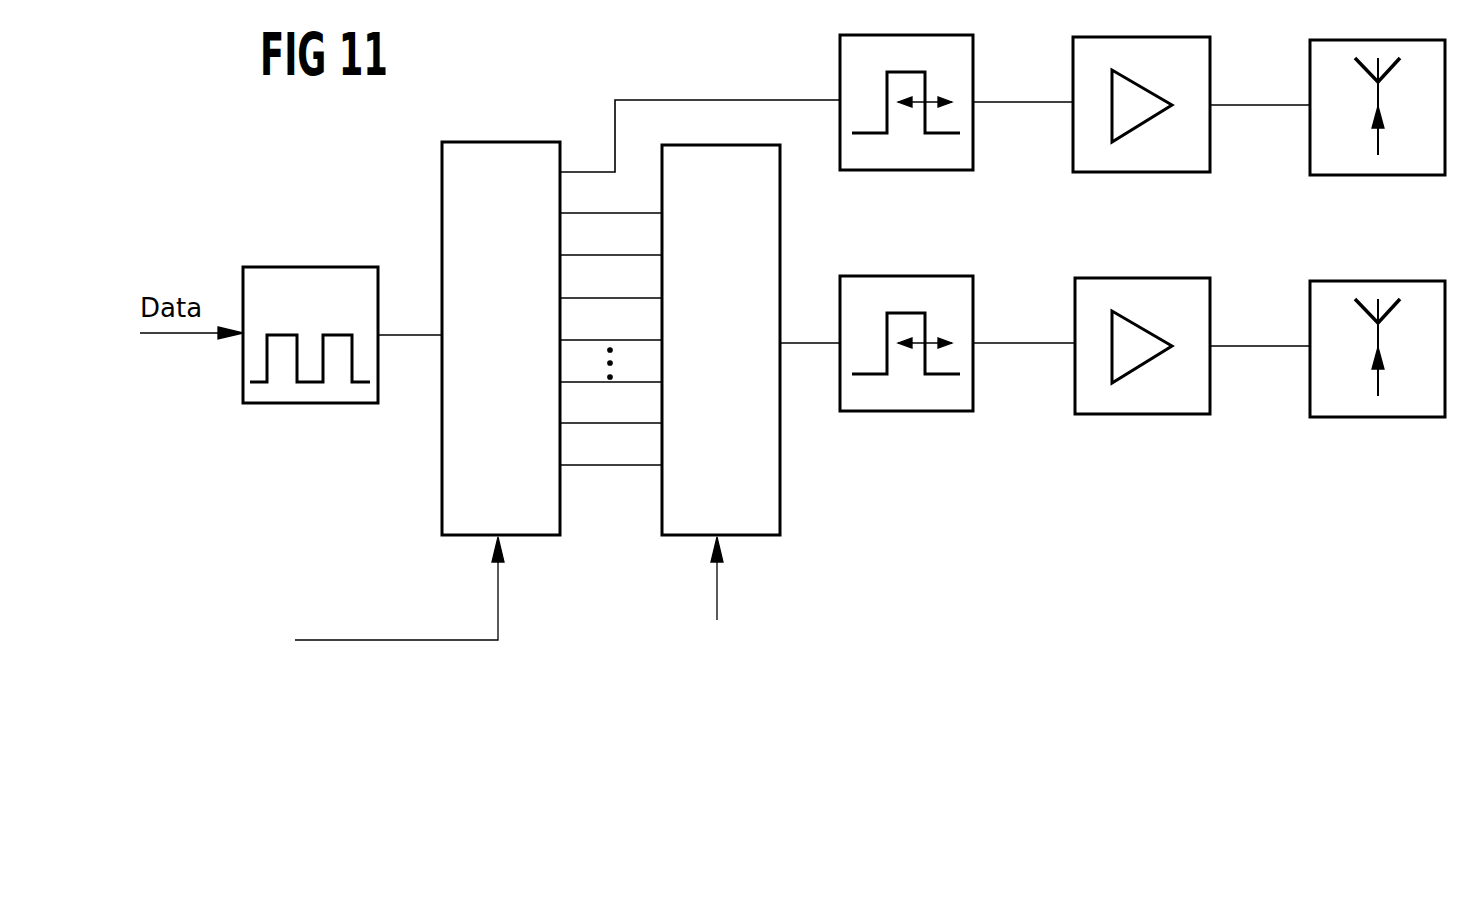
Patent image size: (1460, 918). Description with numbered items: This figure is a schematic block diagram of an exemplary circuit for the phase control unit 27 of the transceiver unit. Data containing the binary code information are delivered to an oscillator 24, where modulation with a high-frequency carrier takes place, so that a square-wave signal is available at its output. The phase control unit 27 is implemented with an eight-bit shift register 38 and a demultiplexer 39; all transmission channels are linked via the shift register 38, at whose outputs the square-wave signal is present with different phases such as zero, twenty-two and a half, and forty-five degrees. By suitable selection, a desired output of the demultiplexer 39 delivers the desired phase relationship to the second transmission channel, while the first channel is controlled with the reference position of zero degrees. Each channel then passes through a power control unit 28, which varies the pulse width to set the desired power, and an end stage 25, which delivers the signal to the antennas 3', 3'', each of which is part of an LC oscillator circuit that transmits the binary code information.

The oscillator 24 is at (310, 405).
The phase control unit 27 is at (563, 396).
The shift register 38 is at (503, 152).
The demultiplexer 39 is at (766, 510).
The power control unit 28 is at (905, 160).
The end stage 25 is at (1141, 162).
The antenna 3' is at (1377, 145).
The antenna 3'' is at (1377, 385).